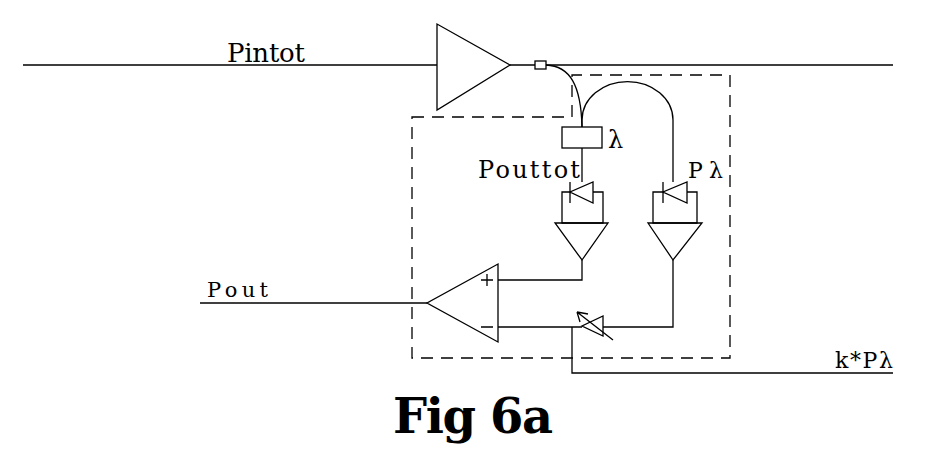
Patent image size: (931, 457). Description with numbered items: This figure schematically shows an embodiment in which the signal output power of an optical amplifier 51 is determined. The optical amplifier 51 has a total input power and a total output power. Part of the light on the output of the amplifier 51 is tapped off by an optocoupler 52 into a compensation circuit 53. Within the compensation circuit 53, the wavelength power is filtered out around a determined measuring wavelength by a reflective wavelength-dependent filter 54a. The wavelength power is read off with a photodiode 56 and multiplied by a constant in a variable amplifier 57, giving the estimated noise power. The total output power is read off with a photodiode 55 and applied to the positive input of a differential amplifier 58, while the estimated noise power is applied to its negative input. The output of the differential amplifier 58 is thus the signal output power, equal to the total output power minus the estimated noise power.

The optical amplifier 51 is at (437, 50).
The optocoupler 52 is at (540, 61).
The compensation circuit 53 is at (731, 105).
The reflective wavelength-dependent filter 54a is at (562, 137).
The photodiode 55 is at (570, 192).
The photodiode 56 is at (686, 188).
The variable amplifier 57 is at (592, 333).
The differential amplifier 58 is at (462, 327).